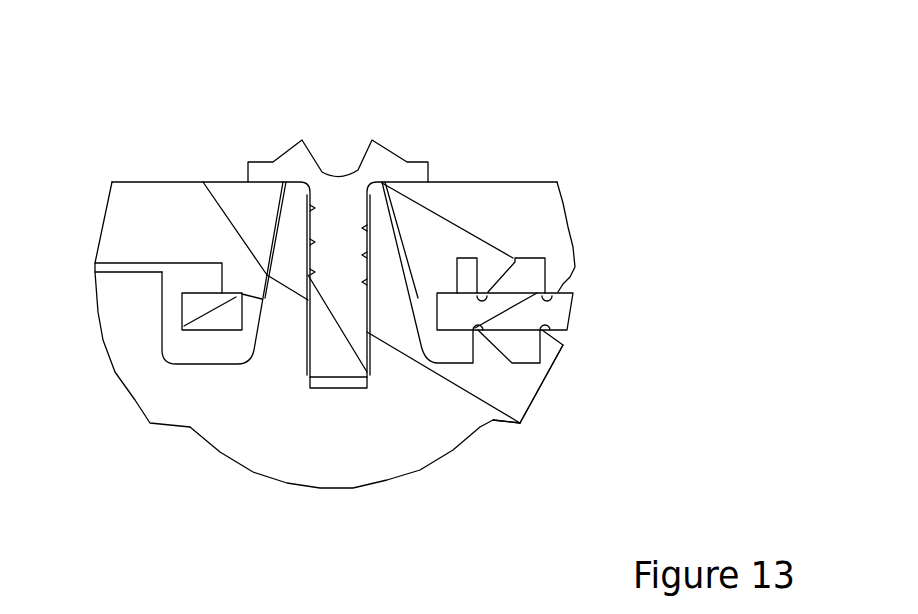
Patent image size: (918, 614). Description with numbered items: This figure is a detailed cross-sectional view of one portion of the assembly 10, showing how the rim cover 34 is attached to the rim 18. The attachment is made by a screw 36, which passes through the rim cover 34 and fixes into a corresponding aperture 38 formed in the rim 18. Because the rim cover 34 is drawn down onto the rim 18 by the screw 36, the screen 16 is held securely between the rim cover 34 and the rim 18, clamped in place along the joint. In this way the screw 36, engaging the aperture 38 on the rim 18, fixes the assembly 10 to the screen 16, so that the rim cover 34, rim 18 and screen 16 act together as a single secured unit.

The assembly 10 is at (548, 134).
The screen 16 is at (193, 300).
The rim 18 is at (518, 392).
The rim cover 34 is at (132, 218).
The screw 36 is at (297, 155).
The aperture 38 is at (285, 222).